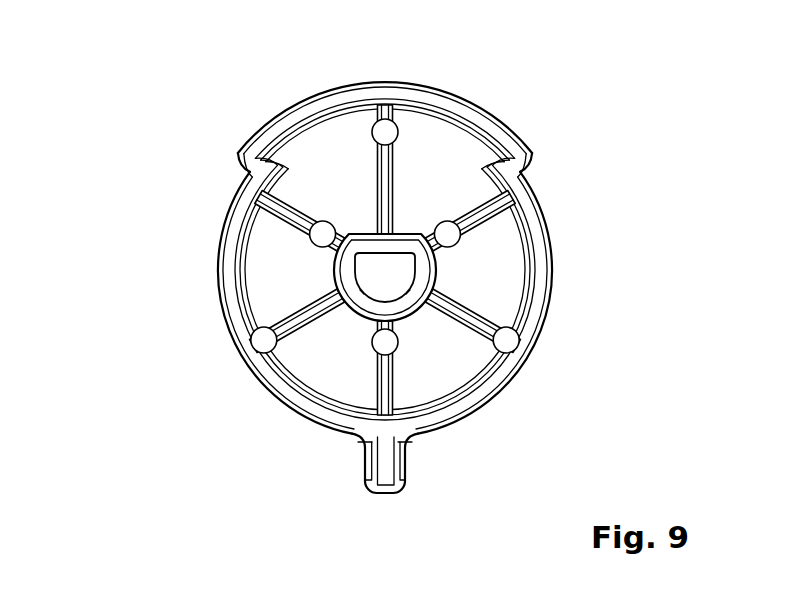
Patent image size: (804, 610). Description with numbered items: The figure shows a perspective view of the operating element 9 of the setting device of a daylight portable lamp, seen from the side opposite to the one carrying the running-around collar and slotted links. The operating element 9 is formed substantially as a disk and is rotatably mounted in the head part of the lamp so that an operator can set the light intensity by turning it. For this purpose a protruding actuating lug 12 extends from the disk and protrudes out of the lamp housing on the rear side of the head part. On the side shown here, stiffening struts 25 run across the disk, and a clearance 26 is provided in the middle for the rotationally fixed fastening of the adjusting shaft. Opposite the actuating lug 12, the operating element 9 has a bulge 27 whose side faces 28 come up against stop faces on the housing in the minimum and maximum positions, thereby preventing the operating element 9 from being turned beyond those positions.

The operating element 9 is at (338, 256).
The actuating lug 12 is at (381, 460).
The stiffening struts 25 is at (472, 228).
The clearance 26 is at (378, 271).
The bulge 27 is at (386, 83).
The side faces 28 is at (237, 153).